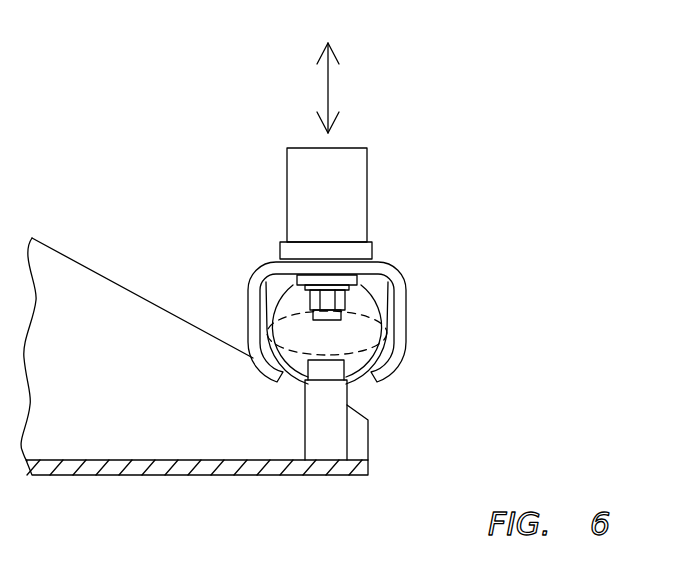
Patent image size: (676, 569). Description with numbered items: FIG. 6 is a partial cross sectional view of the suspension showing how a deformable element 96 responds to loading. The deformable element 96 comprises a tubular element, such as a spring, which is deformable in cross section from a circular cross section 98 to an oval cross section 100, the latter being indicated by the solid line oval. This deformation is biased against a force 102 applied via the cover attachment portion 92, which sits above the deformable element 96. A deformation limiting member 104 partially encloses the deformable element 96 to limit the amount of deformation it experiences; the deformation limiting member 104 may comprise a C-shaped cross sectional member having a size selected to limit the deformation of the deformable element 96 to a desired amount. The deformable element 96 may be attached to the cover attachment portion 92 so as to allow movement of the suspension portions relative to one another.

The cover attachment portion 92 is at (382, 197).
The deformable element 96 is at (363, 289).
The circular cross section 98 is at (350, 307).
The oval cross section 100 is at (347, 338).
The force 102 is at (330, 88).
The deformation limiting member 104 is at (262, 272).